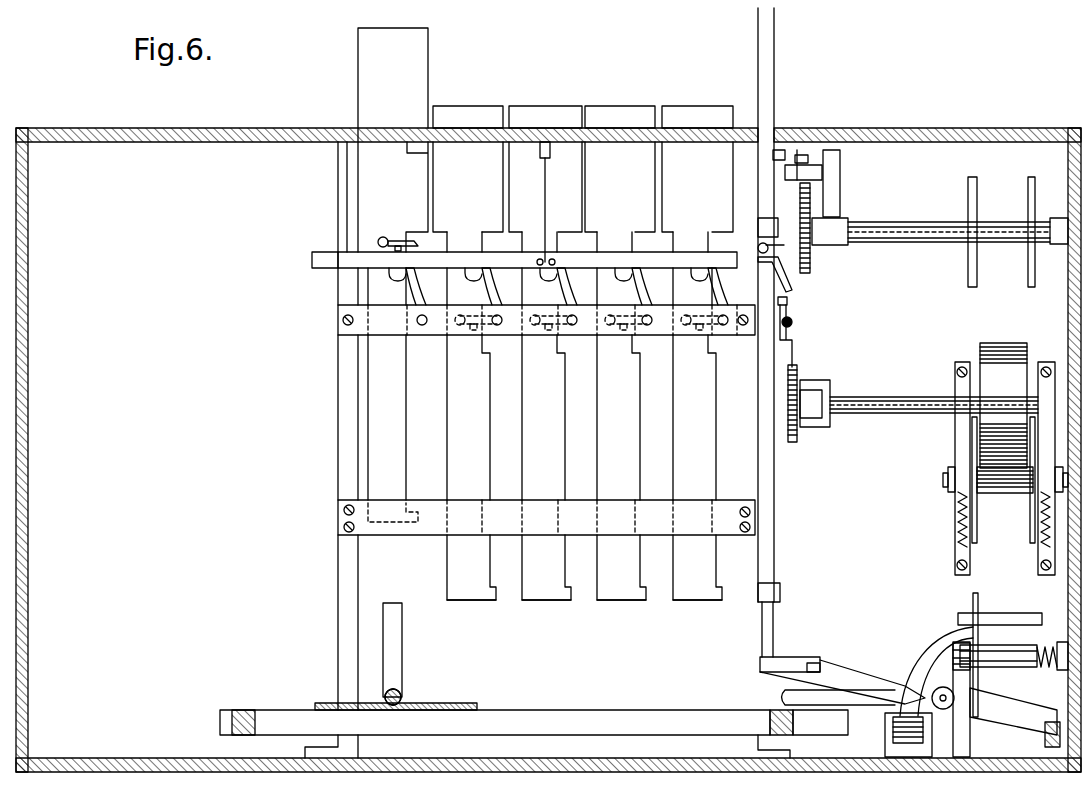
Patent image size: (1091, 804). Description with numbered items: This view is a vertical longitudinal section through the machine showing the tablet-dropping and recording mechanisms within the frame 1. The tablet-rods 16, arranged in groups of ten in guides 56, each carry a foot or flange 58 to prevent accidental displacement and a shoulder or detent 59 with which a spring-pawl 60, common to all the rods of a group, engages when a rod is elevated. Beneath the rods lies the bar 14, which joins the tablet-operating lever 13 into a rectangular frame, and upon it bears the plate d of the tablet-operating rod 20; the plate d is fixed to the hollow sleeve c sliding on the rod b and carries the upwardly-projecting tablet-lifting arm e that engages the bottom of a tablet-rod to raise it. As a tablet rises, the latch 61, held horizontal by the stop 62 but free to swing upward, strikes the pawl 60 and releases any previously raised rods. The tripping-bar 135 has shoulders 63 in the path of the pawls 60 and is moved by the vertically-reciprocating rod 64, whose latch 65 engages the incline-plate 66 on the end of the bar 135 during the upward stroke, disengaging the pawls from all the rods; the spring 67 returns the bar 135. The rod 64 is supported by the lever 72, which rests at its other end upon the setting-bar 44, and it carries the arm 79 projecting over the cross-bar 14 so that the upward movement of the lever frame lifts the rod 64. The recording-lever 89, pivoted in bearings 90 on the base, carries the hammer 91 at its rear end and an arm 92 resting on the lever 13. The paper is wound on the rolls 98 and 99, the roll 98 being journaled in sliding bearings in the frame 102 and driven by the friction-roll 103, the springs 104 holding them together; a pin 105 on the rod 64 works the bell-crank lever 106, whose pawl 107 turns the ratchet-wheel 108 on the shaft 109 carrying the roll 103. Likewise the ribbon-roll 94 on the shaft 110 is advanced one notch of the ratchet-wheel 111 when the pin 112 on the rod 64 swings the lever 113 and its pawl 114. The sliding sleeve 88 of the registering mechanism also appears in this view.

The frame 1 is at (29, 328).
The tablet-operating lever 13 is at (240, 737).
The bar 14 is at (495, 722).
The tablet-rods 16 is at (480, 578).
The tablet-operating rod 20 is at (403, 697).
The setting-bar 44 is at (1046, 742).
The guides 56 is at (503, 125).
The foot or flange 58 is at (584, 609).
The shoulder or detent 59 is at (412, 266).
The spring-pawl 60 is at (415, 284).
The latch 61 is at (389, 238).
The stop 62 is at (405, 241).
The shoulders 63 is at (396, 278).
The rod 64 is at (770, 508).
The latch 65 is at (777, 235).
The incline-plate 66 is at (795, 288).
The spring 67 is at (557, 203).
The lever 72 is at (882, 677).
The arm 79 is at (800, 665).
The sliding sleeve 88 is at (398, 536).
The recording-lever 89 is at (712, 350).
The bearings 90 is at (889, 723).
The hammer or head 91 is at (1002, 617).
The arm 92 is at (833, 698).
The roll 94 is at (975, 212).
The roll 98 is at (978, 505).
The roll 99 is at (980, 600).
The frame 102 is at (1045, 366).
The friction-roll 103 is at (1003, 405).
The springs 104 is at (955, 522).
The pin 105 is at (788, 305).
The bell-crank lever 106 is at (792, 326).
The pawl 107 is at (795, 357).
The ratchet-wheel 108 is at (798, 440).
The shaft 109 is at (878, 405).
The shaft 110 is at (895, 226).
The ratchet-wheel 111 is at (811, 258).
The pin 112 is at (779, 150).
The lever 113 is at (800, 150).
The pawl 114 is at (808, 158).
The tripping-bar 135 is at (313, 263).
The rod b is at (400, 690).
The hollow sleeve c is at (386, 694).
The plate d is at (470, 704).
The tablet-lifting arm e is at (403, 650).